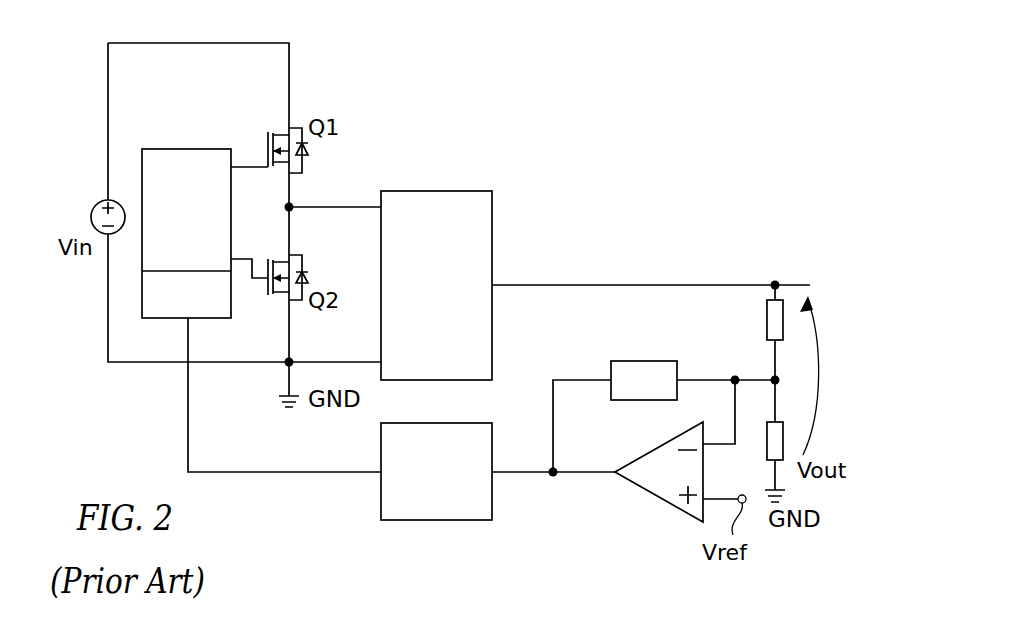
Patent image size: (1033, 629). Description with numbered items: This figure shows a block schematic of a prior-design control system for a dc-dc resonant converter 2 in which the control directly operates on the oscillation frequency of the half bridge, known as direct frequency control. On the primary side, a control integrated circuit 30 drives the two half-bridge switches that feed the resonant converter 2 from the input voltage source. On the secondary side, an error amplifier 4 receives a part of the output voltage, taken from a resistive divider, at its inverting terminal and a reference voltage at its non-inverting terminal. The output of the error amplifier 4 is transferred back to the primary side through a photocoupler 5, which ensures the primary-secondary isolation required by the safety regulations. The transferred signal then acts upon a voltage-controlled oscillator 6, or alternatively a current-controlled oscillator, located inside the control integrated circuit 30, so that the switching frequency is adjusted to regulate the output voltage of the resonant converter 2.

The control integrated circuit 30 is at (189, 149).
The voltage-controlled oscillator 6 is at (180, 305).
The resonant converter 2 is at (429, 297).
The photocoupler 5 is at (413, 520).
The error amplifier 4 is at (670, 488).